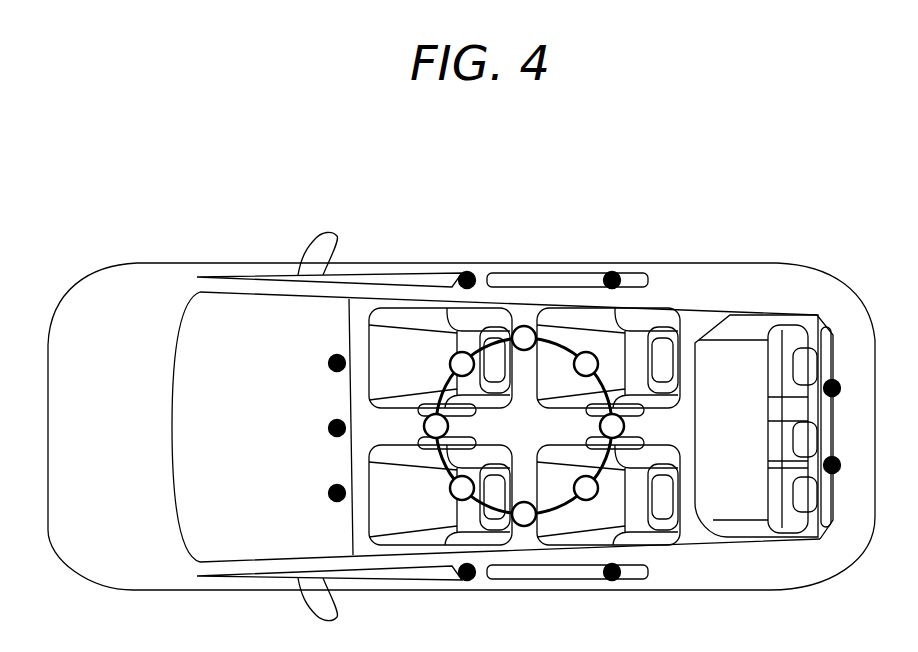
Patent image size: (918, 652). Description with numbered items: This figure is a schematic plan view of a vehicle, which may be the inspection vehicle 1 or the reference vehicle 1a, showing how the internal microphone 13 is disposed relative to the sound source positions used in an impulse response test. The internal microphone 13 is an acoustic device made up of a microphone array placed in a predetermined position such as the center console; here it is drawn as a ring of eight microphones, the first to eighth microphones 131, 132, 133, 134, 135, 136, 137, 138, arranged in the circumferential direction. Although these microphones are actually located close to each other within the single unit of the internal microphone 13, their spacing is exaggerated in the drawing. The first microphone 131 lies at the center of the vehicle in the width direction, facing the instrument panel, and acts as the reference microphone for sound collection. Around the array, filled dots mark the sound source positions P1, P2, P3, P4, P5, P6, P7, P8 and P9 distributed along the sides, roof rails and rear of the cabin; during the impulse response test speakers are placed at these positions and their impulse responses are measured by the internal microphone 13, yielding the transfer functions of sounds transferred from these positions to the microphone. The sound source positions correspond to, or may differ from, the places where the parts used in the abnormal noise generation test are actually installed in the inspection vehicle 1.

The inspection vehicle 1 is at (461, 420).
The reference vehicle 1a is at (808, 267).
The internal microphone 13 is at (556, 344).
The first microphone 131 is at (424, 426).
The second microphone 132 is at (450, 364).
The third microphone 133 is at (526, 326).
The fourth microphone 134 is at (599, 358).
The fifth microphone 135 is at (624, 422).
The sixth microphone 136 is at (598, 485).
The seventh microphone 137 is at (524, 526).
The eighth microphone 138 is at (450, 489).
The sound source position P1 is at (321, 429).
The sound source position P2 is at (321, 364).
The sound source position P3 is at (466, 264).
The sound source position P4 is at (613, 264).
The sound source position P5 is at (849, 389).
The sound source position P6 is at (849, 466).
The sound source position P7 is at (613, 595).
The sound source position P8 is at (468, 595).
The sound source position P9 is at (321, 494).